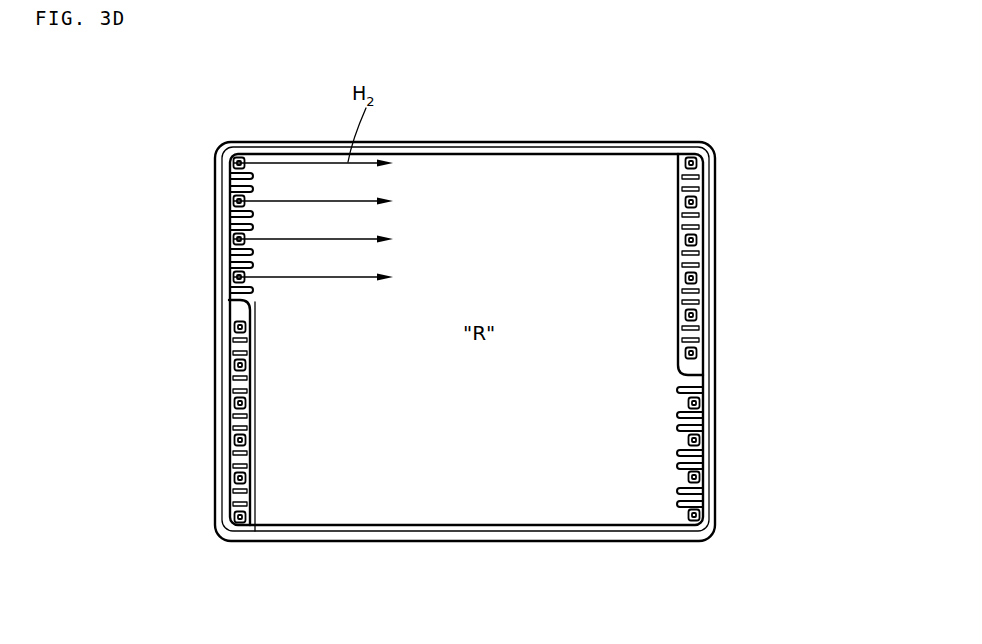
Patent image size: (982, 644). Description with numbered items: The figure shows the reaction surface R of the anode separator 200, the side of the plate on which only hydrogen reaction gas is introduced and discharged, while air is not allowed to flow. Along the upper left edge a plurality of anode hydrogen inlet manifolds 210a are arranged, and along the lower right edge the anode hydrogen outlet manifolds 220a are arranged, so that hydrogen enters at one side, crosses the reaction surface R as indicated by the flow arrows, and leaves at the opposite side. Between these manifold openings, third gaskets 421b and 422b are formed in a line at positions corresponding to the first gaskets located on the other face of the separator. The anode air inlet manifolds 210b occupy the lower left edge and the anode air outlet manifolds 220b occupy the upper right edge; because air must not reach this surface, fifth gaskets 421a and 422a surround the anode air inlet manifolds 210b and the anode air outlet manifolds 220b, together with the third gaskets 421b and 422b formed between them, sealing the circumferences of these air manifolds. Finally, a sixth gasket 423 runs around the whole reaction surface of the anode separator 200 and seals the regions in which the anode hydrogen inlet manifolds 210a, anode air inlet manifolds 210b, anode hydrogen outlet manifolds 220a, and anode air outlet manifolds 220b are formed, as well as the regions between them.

The anode separator 200 is at (578, 142).
The sixth gasket 423 is at (475, 153).
The fifth gasket 421a is at (258, 440).
The third gasket 421b is at (255, 229).
The fifth gasket 422a is at (675, 217).
The third gasket 422b is at (678, 452).
The anode hydrogen inlet manifold 210a is at (234, 163).
The anode air inlet manifold 210b is at (234, 517).
The anode hydrogen outlet manifold 220a is at (700, 403).
The anode air outlet manifold 220b is at (700, 163).